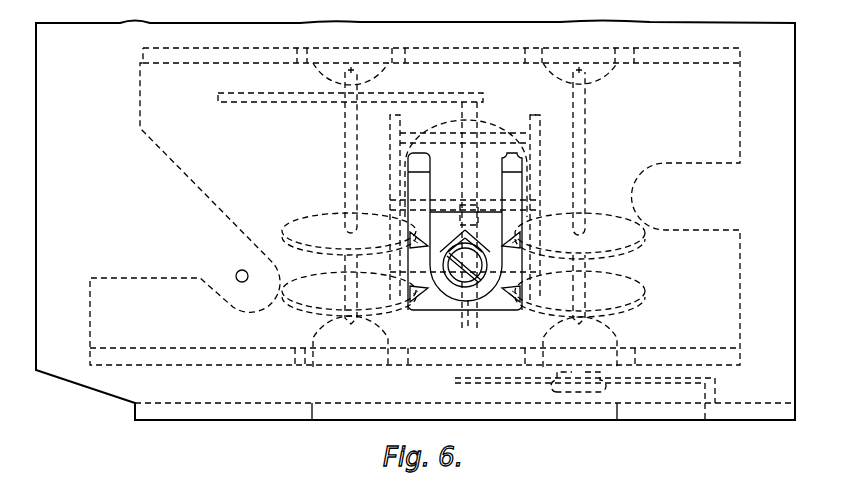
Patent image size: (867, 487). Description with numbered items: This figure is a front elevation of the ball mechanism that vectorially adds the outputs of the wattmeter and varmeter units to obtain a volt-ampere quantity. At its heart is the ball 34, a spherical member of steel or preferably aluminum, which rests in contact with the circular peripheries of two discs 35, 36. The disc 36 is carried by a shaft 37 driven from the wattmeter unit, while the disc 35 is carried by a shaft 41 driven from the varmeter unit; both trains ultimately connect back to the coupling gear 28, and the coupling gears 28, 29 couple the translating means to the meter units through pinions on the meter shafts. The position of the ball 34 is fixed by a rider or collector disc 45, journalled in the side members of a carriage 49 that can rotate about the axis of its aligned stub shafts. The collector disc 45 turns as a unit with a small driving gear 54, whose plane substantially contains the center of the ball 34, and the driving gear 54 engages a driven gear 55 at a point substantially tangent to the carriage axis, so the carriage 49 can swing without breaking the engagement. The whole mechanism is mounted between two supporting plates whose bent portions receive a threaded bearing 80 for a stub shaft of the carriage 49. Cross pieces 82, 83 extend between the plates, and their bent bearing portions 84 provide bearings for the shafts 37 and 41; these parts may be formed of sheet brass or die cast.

The coupling gear 28 is at (218, 98).
The coupling gear 29 is at (707, 420).
The ball 34 is at (493, 128).
The disc 35 is at (310, 222).
The disc 36 is at (640, 240).
The shaft 37 is at (585, 140).
The shaft 41 is at (345, 146).
The rider or collector disc 45 is at (462, 116).
The carriage 49 is at (542, 128).
The driving gear 54 is at (477, 115).
The driven gear 55 is at (470, 326).
The bearing 80 is at (461, 283).
The cross piece 82 is at (437, 48).
The cross piece 83 is at (207, 352).
The bent bearing portion 84 is at (541, 330).